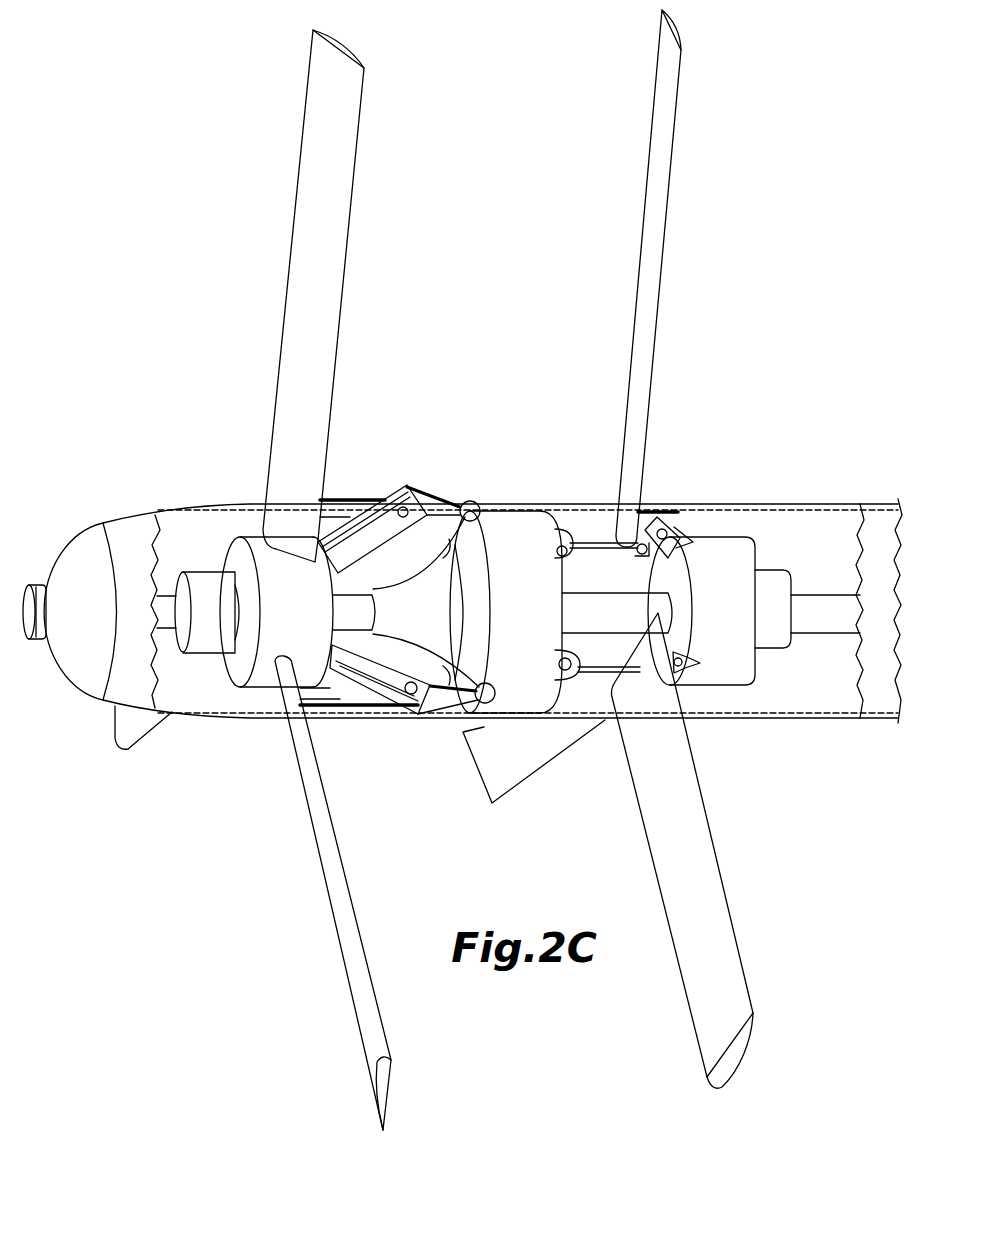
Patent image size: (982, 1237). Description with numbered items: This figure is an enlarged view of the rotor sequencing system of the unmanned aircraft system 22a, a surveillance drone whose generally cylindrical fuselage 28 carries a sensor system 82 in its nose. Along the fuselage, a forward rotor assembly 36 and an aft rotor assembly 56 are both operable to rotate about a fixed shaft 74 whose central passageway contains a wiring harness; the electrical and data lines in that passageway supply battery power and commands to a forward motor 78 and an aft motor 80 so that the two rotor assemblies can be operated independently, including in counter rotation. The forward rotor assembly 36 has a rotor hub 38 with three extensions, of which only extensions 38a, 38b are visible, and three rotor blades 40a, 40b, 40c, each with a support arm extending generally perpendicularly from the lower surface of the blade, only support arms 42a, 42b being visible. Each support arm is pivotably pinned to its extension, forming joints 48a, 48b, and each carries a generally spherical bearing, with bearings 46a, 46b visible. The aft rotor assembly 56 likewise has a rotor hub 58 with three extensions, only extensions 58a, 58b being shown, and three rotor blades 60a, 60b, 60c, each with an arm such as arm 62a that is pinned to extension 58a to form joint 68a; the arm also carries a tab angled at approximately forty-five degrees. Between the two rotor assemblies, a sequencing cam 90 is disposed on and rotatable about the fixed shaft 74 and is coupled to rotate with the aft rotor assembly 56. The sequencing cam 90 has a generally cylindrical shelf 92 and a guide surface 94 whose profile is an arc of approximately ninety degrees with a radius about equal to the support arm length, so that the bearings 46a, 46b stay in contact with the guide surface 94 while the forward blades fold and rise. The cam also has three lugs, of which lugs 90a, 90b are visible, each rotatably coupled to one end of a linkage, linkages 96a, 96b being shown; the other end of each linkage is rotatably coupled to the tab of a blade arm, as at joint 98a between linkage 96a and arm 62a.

The unmanned aircraft system 22a is at (748, 392).
The fuselage 28 is at (877, 708).
The forward rotor assembly 36 is at (283, 300).
The rotor hub 38 is at (297, 612).
The extension 38a is at (357, 533).
The extension 38b is at (395, 680).
The rotor blade 40a is at (315, 115).
The rotor blade 40b is at (329, 919).
The rotor blade 40c is at (128, 740).
The support arm 42a is at (332, 506).
The support arm 42b is at (329, 698).
The bearing 46a is at (474, 500).
The bearing 46b is at (488, 705).
The joint 48a is at (404, 506).
The joint 48b is at (411, 698).
The aft rotor assembly 56 is at (633, 299).
The rotor hub 58 is at (701, 611).
The extension 58a is at (687, 538).
The extension 58b is at (690, 668).
The rotor blade 60a is at (658, 146).
The rotor blade 60b is at (671, 885).
The rotor blade 60c is at (548, 752).
The arm 62a is at (673, 524).
The joint 68a is at (662, 513).
The fixed shaft 74 is at (818, 612).
The forward motor 78 is at (198, 612).
The aft motor 80 is at (773, 609).
The sensor system 82 is at (68, 555).
The sequencing cam 90 is at (561, 612).
The lug 90a is at (558, 522).
The lug 90b is at (563, 680).
The shelf 92 is at (510, 518).
The guide surface 94 is at (426, 602).
The linkage 96a is at (583, 544).
The linkage 96b is at (592, 673).
The joint 98a is at (642, 543).